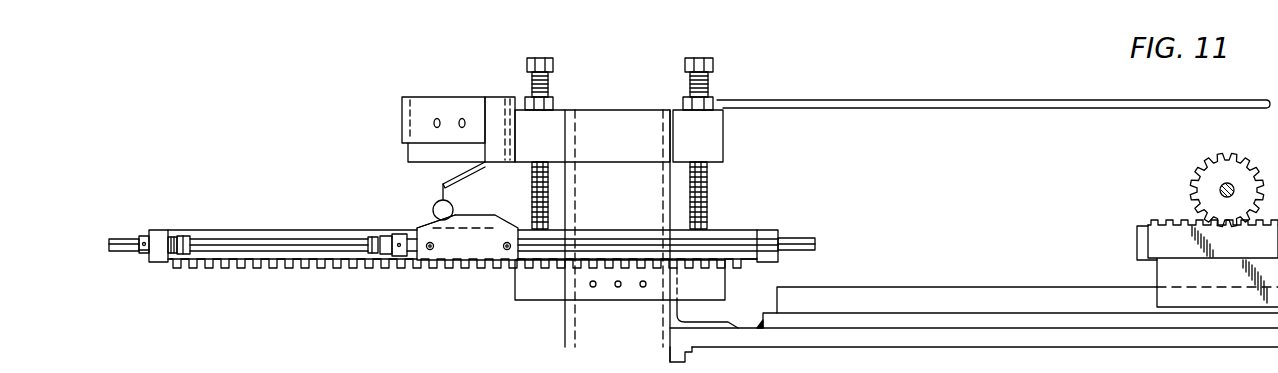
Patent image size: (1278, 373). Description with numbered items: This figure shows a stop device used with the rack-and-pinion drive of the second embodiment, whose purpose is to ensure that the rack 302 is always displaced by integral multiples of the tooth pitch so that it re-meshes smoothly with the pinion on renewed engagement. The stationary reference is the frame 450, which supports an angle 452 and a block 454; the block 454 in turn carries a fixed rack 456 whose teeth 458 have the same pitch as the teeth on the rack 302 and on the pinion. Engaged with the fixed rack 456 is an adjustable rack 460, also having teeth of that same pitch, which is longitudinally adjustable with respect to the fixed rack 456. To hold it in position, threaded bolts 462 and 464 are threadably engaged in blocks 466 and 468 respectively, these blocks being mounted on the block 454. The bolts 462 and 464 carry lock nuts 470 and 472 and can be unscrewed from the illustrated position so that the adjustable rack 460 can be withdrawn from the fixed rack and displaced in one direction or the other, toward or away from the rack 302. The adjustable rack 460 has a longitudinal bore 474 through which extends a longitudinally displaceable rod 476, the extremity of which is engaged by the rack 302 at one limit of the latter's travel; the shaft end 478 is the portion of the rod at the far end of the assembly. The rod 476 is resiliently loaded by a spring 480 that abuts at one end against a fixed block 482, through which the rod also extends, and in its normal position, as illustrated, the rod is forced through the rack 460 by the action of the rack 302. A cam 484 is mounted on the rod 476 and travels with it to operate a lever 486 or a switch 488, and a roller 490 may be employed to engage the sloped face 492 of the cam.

The rack 302 is at (1160, 220).
The frame 450 is at (936, 335).
The angle 452 is at (693, 310).
The block 454 is at (603, 337).
The fixed rack 456 is at (641, 280).
The teeth 458 is at (713, 262).
The adjustable rack 460 is at (622, 228).
The threaded bolt 462 is at (532, 192).
The threaded bolt 464 is at (690, 195).
The block 466 is at (566, 132).
The block 468 is at (697, 143).
The lock nut 470 is at (554, 103).
The lock nut 472 is at (685, 103).
The longitudinal bore 474 is at (665, 221).
The rod 476 is at (760, 243).
The shaft end 478 is at (817, 239).
The spring 480 is at (190, 236).
The fixed block 482 is at (168, 232).
The cam 484 is at (452, 250).
The lever 486 is at (441, 185).
The switch 488 is at (452, 106).
The roller 490 is at (434, 207).
The sloped face 492 is at (420, 224).